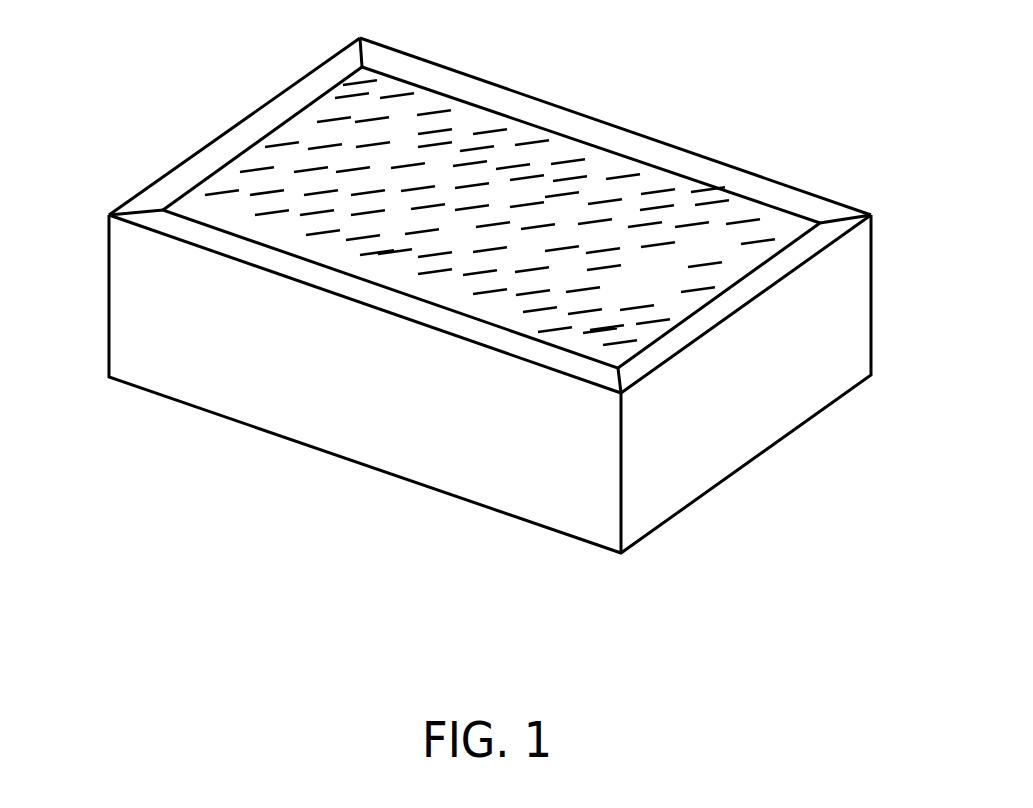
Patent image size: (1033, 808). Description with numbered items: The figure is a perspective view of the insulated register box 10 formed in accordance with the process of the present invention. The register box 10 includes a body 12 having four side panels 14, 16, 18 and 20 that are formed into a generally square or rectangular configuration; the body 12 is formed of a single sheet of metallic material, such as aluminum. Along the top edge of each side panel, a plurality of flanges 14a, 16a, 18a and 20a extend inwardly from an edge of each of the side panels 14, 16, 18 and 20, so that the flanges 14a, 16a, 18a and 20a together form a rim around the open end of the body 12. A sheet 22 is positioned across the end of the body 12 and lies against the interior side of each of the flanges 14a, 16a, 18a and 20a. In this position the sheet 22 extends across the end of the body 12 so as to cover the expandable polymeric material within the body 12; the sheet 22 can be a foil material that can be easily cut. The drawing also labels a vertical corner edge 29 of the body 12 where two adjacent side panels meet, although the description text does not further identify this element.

The insulated register box 10 is at (708, 96).
The body 12 is at (857, 327).
The side panel 14 is at (727, 465).
The flange 14a is at (817, 242).
The side panel 16 is at (522, 508).
The flange 16a is at (170, 230).
The side panel 18 is at (197, 148).
The flange 18a is at (292, 100).
The side panel 20 is at (755, 175).
The flange 20a is at (527, 102).
The sheet 22 is at (671, 288).
The front corner edge 29 is at (621, 467).